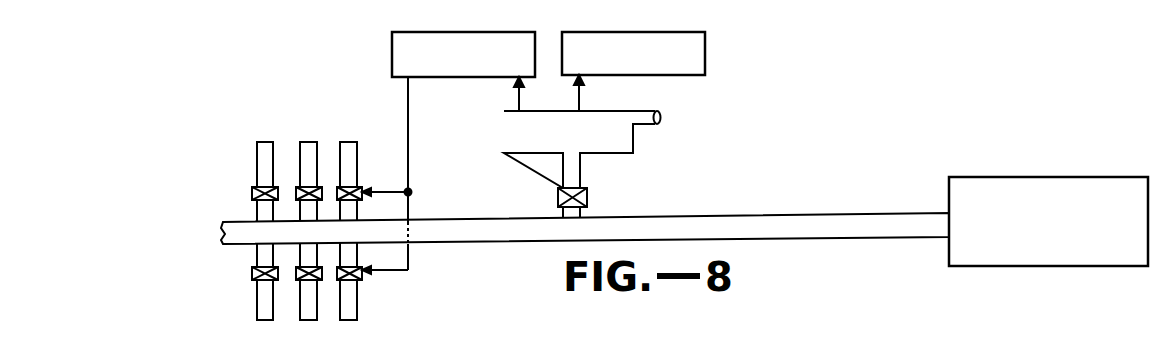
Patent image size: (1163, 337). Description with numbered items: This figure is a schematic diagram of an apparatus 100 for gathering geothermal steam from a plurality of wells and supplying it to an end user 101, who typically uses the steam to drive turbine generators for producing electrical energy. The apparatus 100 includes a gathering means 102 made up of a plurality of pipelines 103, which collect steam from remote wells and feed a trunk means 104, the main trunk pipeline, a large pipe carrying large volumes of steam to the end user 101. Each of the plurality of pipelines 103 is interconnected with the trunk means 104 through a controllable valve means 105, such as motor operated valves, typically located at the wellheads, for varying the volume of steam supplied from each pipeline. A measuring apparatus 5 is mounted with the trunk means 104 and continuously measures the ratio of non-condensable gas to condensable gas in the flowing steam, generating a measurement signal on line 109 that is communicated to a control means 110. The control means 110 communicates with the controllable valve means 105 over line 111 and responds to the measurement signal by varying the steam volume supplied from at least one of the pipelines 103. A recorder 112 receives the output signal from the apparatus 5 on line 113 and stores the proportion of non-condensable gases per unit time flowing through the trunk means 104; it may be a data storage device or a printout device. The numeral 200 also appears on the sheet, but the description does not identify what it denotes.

The apparatus 100 is at (648, 164).
The end user 101 is at (1048, 221).
The gathering means 102 is at (228, 185).
The plurality of pipelines 103 is at (294, 130).
The trunk means 104 is at (238, 241).
The controllable valve means 105 is at (368, 165).
The line 109 is at (517, 101).
The control means 110 is at (513, 38).
The line 111 is at (409, 158).
The recorder 112 is at (677, 32).
The line 113 is at (577, 100).
The apparatus 5 is at (610, 125).
The system 200 is at (717, 335).